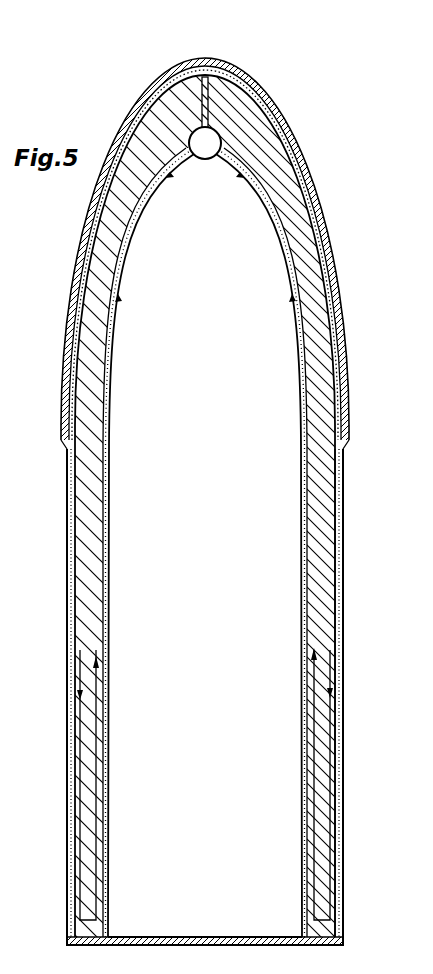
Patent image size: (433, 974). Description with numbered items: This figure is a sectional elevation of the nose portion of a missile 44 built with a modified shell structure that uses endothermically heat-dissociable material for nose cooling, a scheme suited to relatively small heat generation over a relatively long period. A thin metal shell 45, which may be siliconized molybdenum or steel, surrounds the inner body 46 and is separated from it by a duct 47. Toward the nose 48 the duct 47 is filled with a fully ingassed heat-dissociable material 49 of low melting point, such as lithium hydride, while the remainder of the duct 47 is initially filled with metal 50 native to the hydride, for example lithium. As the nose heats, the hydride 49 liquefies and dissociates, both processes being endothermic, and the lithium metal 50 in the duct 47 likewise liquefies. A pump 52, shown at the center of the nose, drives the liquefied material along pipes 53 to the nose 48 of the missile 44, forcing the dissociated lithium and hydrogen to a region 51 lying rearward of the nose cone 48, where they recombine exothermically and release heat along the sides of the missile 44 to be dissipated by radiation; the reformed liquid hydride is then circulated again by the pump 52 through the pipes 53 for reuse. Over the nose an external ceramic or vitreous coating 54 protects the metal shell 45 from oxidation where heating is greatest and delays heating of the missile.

The missile 44 is at (210, 491).
The thin metal shell 45 is at (343, 490).
The inner body 46 is at (320, 524).
The duct 47 is at (333, 548).
The nose 48 is at (238, 62).
The heat-dissociable material 49 is at (283, 120).
The metal 50 is at (100, 575).
The region 51 is at (345, 728).
The pump 52 is at (191, 158).
The pipes 53 is at (310, 635).
The external ceramic or vitreous coating 54 is at (172, 76).